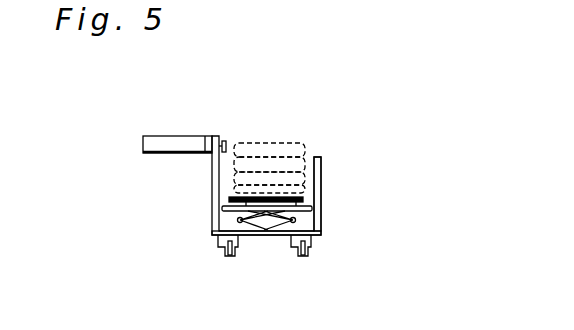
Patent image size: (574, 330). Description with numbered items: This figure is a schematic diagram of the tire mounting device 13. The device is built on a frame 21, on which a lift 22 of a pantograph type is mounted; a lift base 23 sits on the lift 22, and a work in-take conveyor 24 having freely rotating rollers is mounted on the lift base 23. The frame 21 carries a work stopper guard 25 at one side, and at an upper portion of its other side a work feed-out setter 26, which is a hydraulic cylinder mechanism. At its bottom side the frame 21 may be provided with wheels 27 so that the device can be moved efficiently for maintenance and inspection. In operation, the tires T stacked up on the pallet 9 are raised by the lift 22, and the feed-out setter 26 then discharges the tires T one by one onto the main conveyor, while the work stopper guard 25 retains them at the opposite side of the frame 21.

The tire mounting device 13 is at (340, 110).
The tires T is at (267, 147).
The work feed-out setter 26 is at (189, 139).
The work stopper guard 25 is at (322, 159).
The pallet 9 is at (305, 199).
The lift base 23 is at (312, 209).
The work in-take conveyor 24 is at (258, 216).
The wheels 27 is at (226, 256).
The lift 22 is at (276, 236).
The frame 21 is at (318, 238).